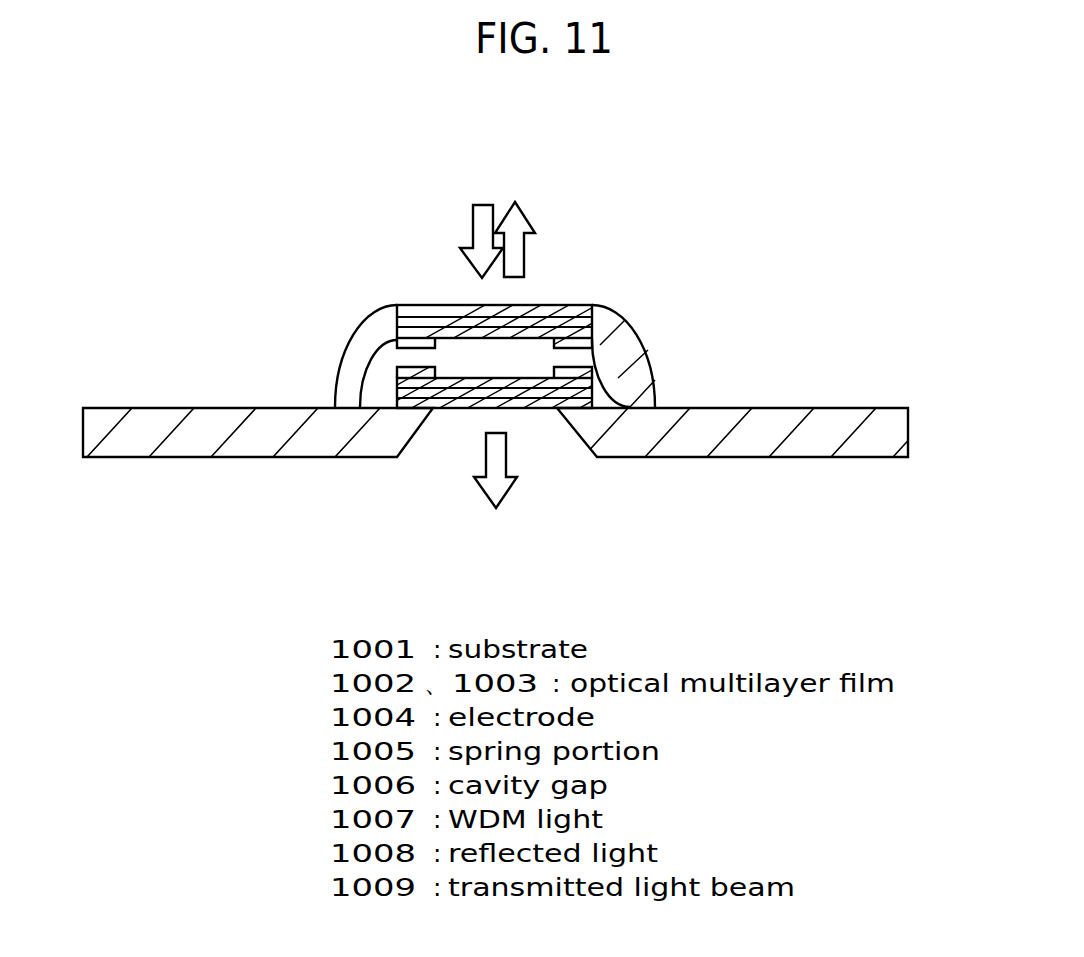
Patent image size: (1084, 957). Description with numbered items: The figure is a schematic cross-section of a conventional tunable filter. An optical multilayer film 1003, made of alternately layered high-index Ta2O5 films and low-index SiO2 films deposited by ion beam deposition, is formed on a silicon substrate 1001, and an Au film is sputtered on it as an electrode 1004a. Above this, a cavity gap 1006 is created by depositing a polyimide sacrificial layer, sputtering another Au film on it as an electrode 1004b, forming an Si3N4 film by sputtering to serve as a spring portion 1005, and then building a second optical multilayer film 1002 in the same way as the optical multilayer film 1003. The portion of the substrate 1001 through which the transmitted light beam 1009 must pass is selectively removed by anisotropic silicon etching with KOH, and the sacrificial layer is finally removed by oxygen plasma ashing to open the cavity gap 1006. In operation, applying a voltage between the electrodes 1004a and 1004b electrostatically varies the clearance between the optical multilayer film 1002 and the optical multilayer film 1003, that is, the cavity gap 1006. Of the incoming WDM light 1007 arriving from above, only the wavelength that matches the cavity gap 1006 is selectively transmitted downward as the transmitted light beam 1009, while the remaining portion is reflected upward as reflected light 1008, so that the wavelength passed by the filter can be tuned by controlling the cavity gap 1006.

The substrate 1001 is at (805, 432).
The optical multilayer film 1002 is at (516, 322).
The optical multilayer film 1003 is at (515, 398).
The electrode 1004a is at (412, 395).
The electrode 1004b is at (399, 303).
The spring portion 1005 is at (385, 315).
The cavity gap 1006 is at (481, 362).
The WDM light 1007 is at (470, 206).
The reflected light 1008 is at (520, 205).
The transmitted light beam 1009 is at (490, 505).